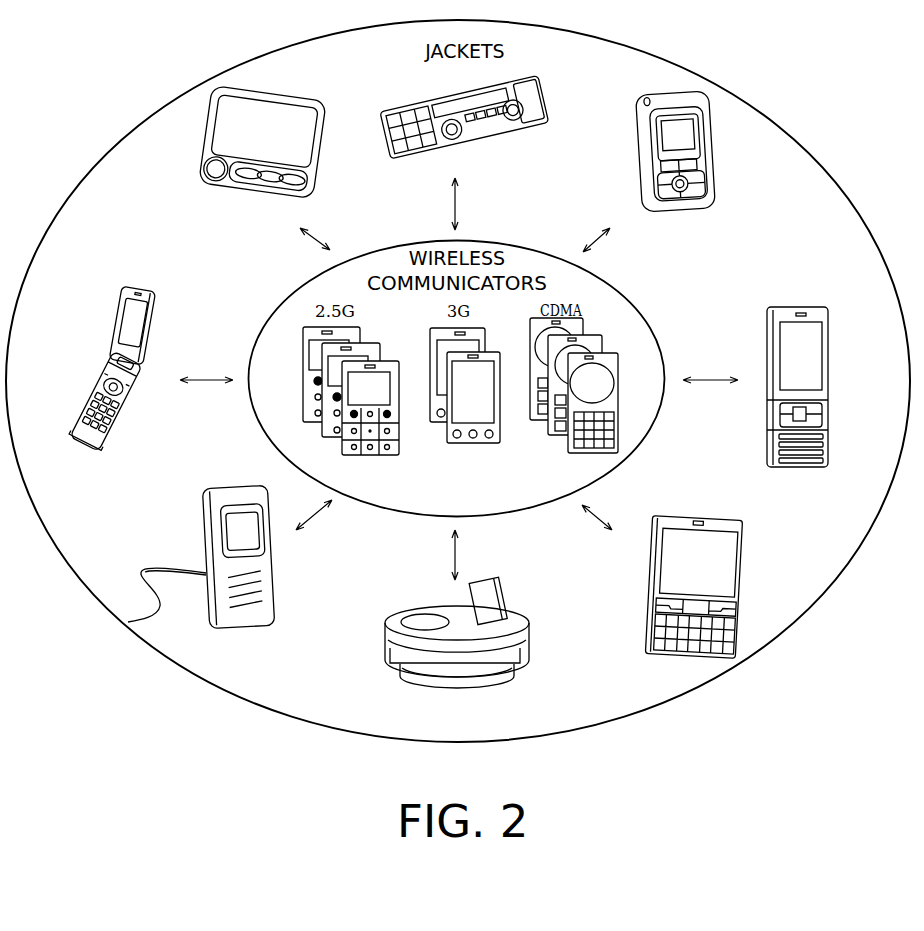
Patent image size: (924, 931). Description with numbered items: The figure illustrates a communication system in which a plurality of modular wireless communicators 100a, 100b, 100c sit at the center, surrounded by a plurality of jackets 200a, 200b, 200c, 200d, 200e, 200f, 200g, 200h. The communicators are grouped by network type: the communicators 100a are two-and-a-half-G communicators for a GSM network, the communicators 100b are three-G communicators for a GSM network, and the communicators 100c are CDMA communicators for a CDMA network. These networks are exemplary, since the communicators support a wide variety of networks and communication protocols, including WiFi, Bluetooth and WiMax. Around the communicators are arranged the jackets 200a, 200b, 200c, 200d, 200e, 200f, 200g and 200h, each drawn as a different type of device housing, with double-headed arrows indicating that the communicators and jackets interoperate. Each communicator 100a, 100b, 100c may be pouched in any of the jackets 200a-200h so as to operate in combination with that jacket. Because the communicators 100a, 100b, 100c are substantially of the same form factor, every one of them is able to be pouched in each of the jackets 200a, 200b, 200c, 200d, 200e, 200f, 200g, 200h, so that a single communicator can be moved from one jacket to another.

The modular wireless communicator 100a is at (388, 458).
The modular wireless communicator 100b is at (463, 447).
The modular wireless communicator 100c is at (547, 440).
The jacket 200a is at (522, 125).
The jacket 200b is at (715, 188).
The jacket 200c is at (833, 370).
The jacket 200d is at (748, 550).
The jacket 200e is at (512, 598).
The jacket 200f is at (273, 565).
The jacket 200g is at (157, 322).
The jacket 200h is at (333, 188).